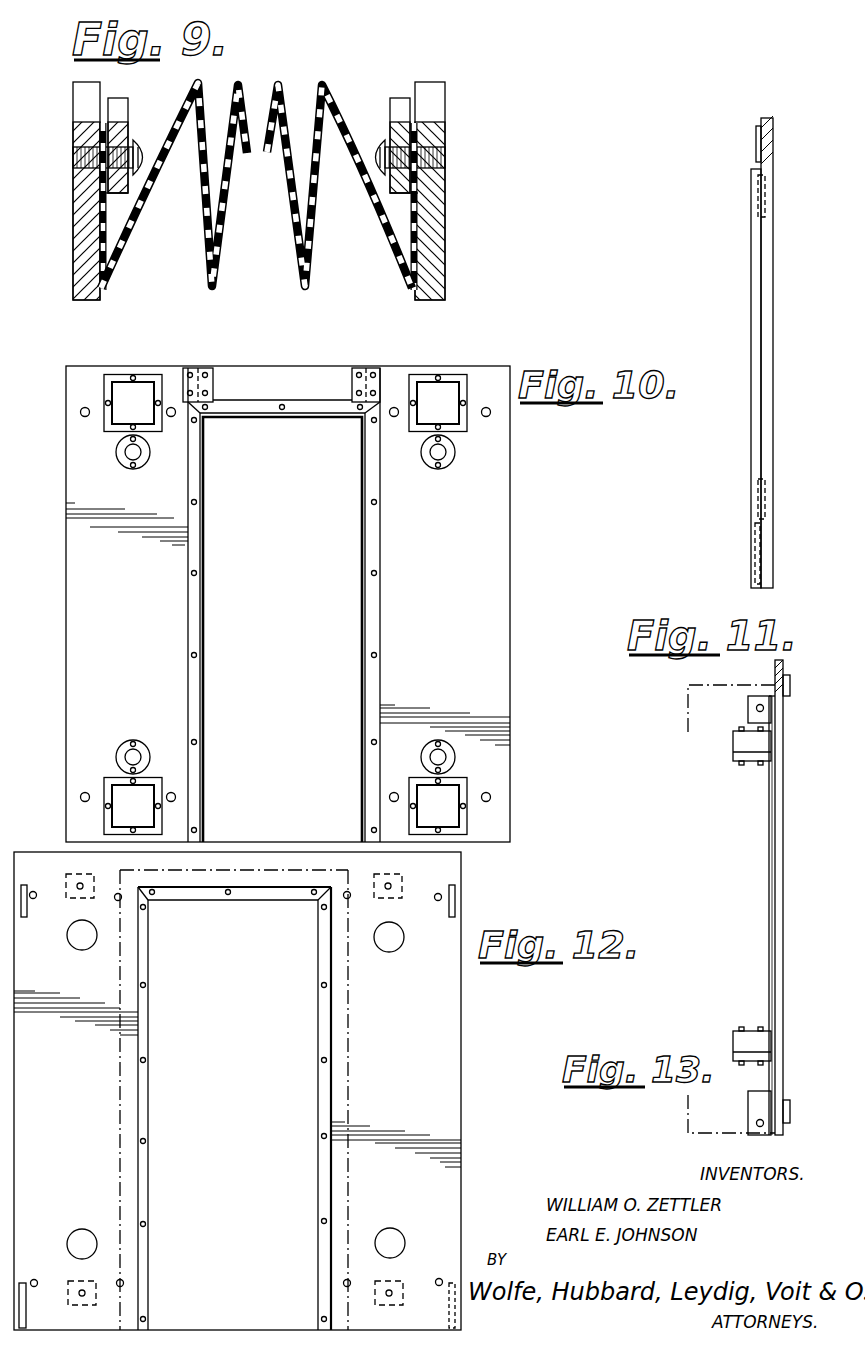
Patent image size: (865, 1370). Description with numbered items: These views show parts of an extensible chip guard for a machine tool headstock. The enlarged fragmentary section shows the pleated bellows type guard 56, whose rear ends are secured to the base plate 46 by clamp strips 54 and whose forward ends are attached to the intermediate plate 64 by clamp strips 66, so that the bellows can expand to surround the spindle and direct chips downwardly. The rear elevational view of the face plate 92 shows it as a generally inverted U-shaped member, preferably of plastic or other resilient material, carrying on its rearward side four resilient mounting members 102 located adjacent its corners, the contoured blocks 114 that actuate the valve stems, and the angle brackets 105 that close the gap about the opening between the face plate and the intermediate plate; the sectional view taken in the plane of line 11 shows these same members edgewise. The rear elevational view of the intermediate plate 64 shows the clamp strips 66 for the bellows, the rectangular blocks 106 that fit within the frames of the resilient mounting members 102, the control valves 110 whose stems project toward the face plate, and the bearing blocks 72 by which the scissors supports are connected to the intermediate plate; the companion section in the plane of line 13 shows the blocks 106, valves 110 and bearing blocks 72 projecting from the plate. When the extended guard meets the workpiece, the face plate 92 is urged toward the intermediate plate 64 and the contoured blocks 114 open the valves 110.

In FIG. 9, the base plate 46 is at (445, 215).
In FIG. 9, the clamp strips 54 is at (387, 128).
In FIG. 9, the bellows type guard 56 is at (300, 255).
In FIG. 12, the bellows type guard 56 is at (343, 1063).
In FIG. 13, the bellows type guard 56 is at (686, 722).
In FIG. 9, the intermediate plate 64 is at (73, 112).
In FIG. 12, the intermediate plate 64 is at (447, 1065).
In FIG. 13, the intermediate plate 64 is at (784, 845).
In FIG. 9, the clamp strips 66 is at (125, 122).
In FIG. 12, the clamp strips 66 is at (230, 896).
In FIG. 13, the clamp strips 66 is at (776, 712).
In FIG. 12, the bearing blocks 72 is at (27, 890).
In FIG. 13, the bearing blocks 72 is at (750, 708).
In FIG. 10, the face plate 92 is at (495, 522).
In FIG. 11, the face plate 92 is at (773, 240).
In FIG. 10, the resilient mounting members 102 is at (110, 375).
In FIG. 11, the resilient mounting members 102 is at (756, 150).
In FIG. 10, the angle brackets 105 is at (305, 410).
In FIG. 11, the angle brackets 105 is at (751, 318).
In FIG. 12, the rectangular block 106 is at (75, 900).
In FIG. 13, the rectangular block 106 is at (791, 686).
In FIG. 12, the control valves 110 is at (78, 948).
In FIG. 13, the control valves 110 is at (748, 762).
In FIG. 10, the contoured blocks 114 is at (116, 452).
In FIG. 11, the contoured blocks 114 is at (758, 198).
In FIG. 10, the section line 11- 11 is at (253, 420).
In FIG. 12, the section line 13- 13 is at (196, 927).